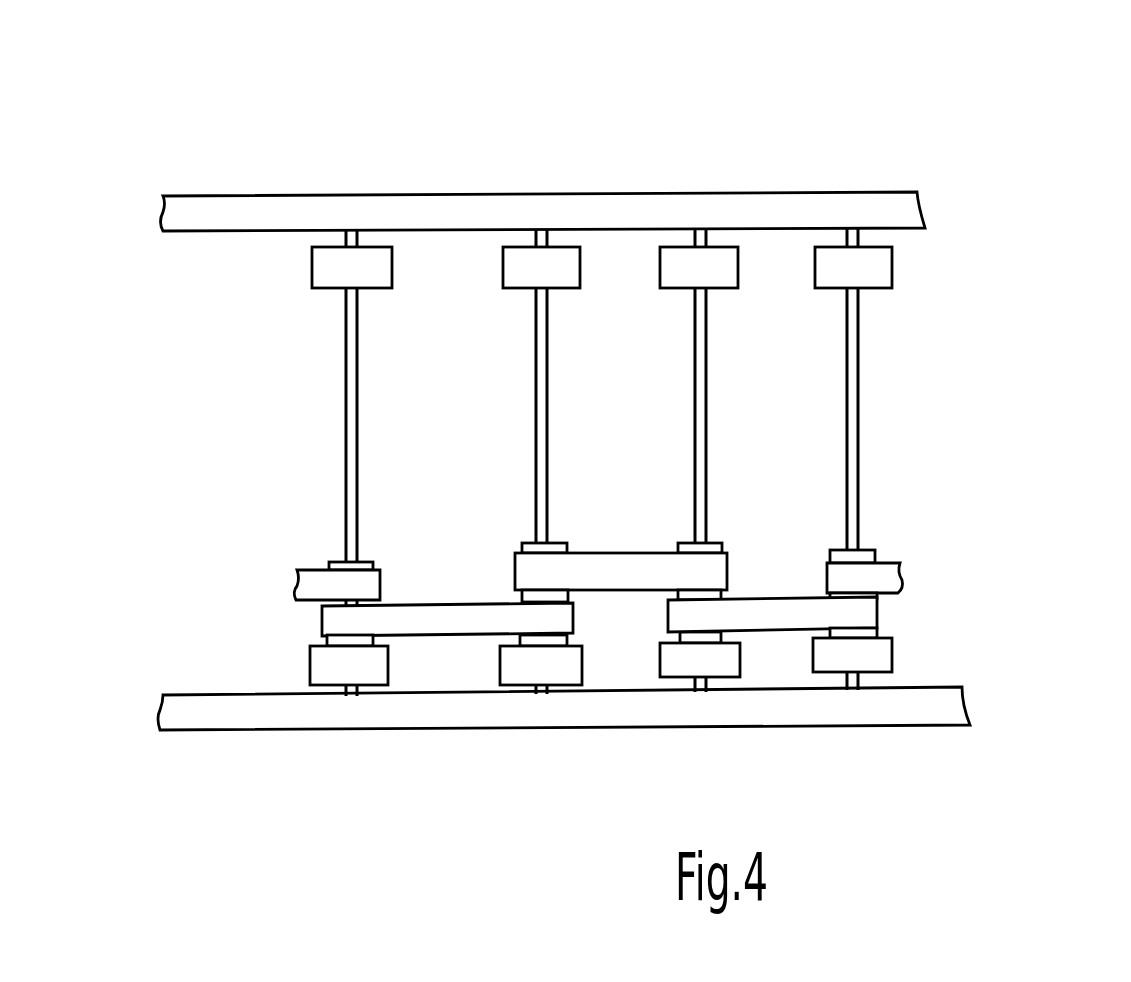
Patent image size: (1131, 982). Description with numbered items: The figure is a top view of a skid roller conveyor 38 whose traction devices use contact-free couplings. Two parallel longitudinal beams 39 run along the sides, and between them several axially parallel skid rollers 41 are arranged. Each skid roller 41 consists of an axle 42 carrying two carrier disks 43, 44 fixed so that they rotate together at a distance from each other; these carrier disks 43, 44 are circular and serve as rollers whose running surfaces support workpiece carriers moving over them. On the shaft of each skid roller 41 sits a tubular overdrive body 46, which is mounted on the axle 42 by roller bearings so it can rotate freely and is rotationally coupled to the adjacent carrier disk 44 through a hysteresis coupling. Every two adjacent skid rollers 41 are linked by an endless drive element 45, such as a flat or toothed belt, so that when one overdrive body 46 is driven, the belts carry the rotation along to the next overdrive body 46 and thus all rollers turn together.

The skid roller conveyor 38 is at (967, 150).
The longitudinal beam 39 is at (477, 213).
The skid roller 41 is at (312, 463).
The axle 42 is at (853, 370).
The carrier disk 43 is at (882, 269).
The carrier disk 44 is at (870, 653).
The endless drive element 45 is at (752, 615).
The overdrive body 46 is at (873, 553).